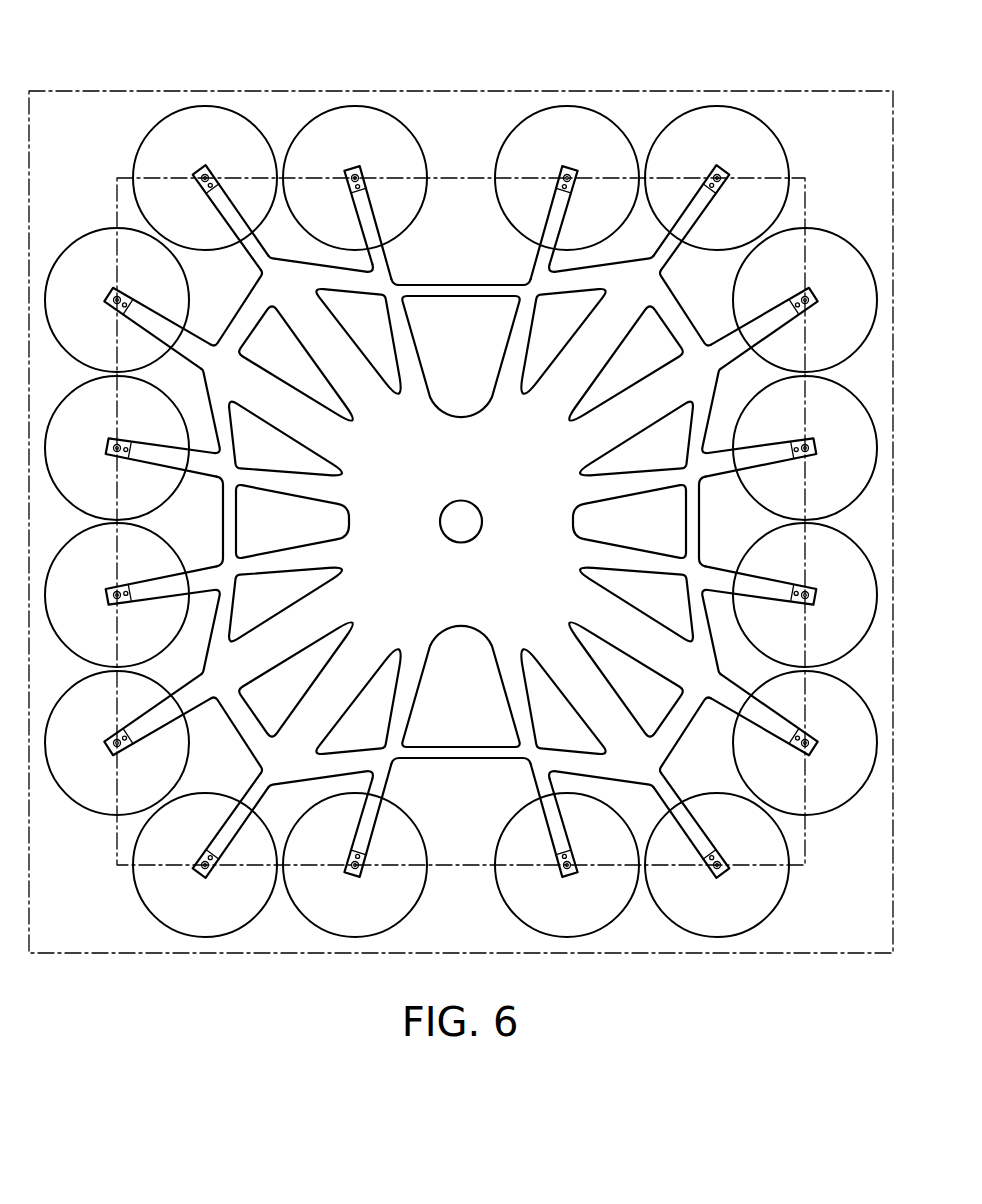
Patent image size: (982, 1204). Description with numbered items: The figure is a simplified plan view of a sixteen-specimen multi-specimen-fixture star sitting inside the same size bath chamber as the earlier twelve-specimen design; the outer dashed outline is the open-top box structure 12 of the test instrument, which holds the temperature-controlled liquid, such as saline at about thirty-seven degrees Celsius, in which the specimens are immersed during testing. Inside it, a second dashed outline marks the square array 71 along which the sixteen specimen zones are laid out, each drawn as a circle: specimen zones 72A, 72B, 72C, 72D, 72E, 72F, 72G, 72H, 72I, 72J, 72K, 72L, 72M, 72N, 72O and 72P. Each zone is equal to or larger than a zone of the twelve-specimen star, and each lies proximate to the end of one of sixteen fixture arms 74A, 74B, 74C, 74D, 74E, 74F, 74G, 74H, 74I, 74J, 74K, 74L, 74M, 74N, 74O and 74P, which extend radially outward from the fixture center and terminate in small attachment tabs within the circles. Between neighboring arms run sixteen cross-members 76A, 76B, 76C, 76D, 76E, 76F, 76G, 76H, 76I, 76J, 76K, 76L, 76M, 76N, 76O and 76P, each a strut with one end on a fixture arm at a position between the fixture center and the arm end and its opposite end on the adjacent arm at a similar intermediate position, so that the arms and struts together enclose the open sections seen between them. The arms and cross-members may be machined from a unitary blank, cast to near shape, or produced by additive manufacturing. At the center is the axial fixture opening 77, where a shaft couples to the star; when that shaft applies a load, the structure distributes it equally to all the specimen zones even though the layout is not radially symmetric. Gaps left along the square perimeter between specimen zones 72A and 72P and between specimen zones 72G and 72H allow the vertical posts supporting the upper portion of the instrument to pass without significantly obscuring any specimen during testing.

The open-top box structure 12 is at (92, 90).
The square array 71 is at (807, 211).
The specimen zone 72A is at (818, 610).
The specimen zone 72B is at (818, 758).
The specimen zone 72C is at (692, 920).
The specimen zone 72D is at (542, 920).
The specimen zone 72E is at (332, 920).
The specimen zone 72F is at (182, 920).
The specimen zone 72G is at (53, 758).
The specimen zone 72H is at (53, 610).
The specimen zone 72I is at (58, 463).
The specimen zone 72J is at (56, 315).
The specimen zone 72K is at (181, 155).
The specimen zone 72L is at (332, 155).
The specimen zone 72M is at (541, 155).
The specimen zone 72N is at (692, 155).
The specimen zone 72O is at (818, 315).
The specimen zone 72P is at (819, 463).
The fixture arm 74A is at (722, 590).
The fixture arm 74B is at (724, 705).
The fixture arm 74C is at (650, 785).
The fixture arm 74D is at (533, 783).
The fixture arm 74E is at (388, 777).
The fixture arm 74F is at (272, 785).
The fixture arm 74G is at (198, 705).
The fixture arm 74H is at (200, 590).
The fixture arm 74I is at (200, 452).
The fixture arm 74J is at (198, 338).
The fixture arm 74K is at (272, 258).
The fixture arm 74L is at (388, 266).
The fixture arm 74M is at (533, 260).
The fixture arm 74N is at (650, 258).
The fixture arm 74O is at (724, 338).
The fixture arm 74P is at (722, 452).
The cross-member 76A is at (685, 522).
The cross-member 76B is at (688, 625).
The cross-member 76C is at (650, 725).
The cross-member 76D is at (560, 745).
The cross-member 76E is at (460, 686).
The cross-member 76F is at (347, 750).
The cross-member 76G is at (272, 725).
The cross-member 76H is at (234, 625).
The cross-member 76I is at (237, 527).
The cross-member 76J is at (234, 418).
The cross-member 76K is at (272, 318).
The cross-member 76L is at (346, 294).
The cross-member 76M is at (460, 356).
The cross-member 76N is at (560, 298).
The cross-member 76O is at (650, 318).
The cross-member 76P is at (688, 418).
The axial fixture opening 77 is at (461, 500).